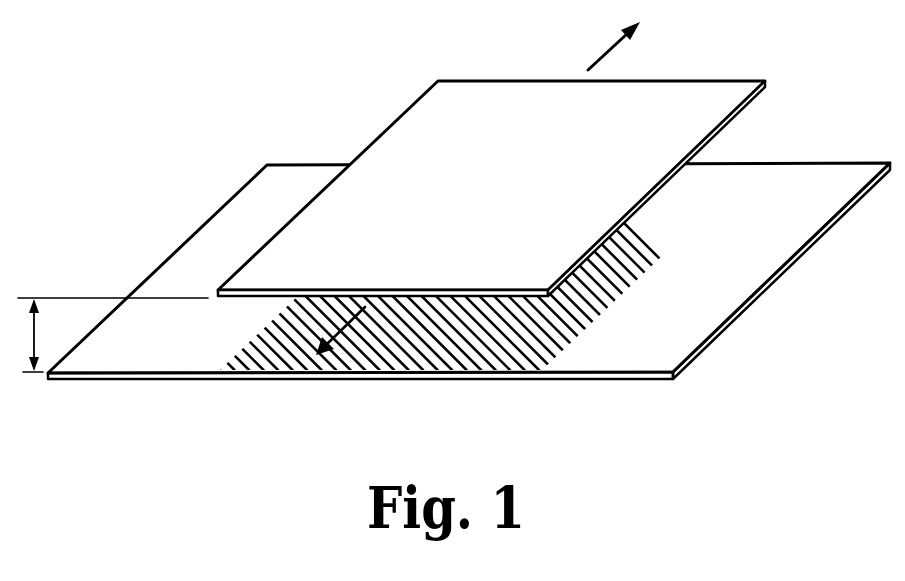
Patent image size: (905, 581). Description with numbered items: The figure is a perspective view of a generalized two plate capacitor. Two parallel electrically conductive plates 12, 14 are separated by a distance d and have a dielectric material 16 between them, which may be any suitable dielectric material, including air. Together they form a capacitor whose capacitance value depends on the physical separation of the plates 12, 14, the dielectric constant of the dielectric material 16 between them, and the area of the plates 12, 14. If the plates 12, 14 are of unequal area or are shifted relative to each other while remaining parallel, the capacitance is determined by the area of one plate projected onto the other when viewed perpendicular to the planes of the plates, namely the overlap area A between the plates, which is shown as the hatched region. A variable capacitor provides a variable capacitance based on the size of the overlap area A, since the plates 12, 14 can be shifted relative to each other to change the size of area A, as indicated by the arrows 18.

The electrically conductive plate 12 is at (690, 320).
The electrically conductive plate 14 is at (693, 93).
The dielectric material 16 is at (238, 320).
The arrows 18 is at (607, 53).
The overlap area A is at (510, 343).
The distance d is at (36, 335).